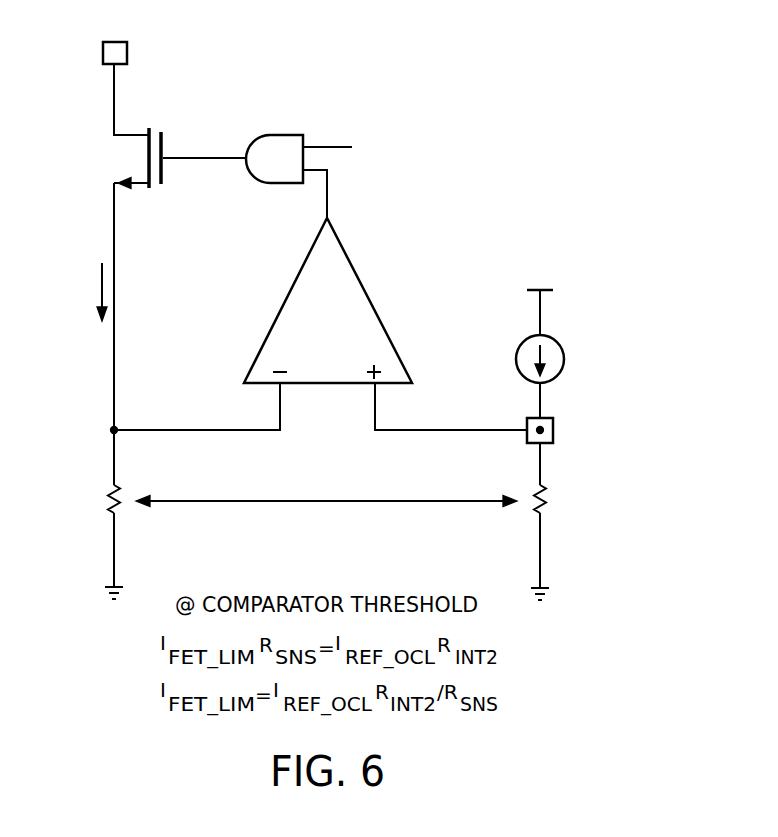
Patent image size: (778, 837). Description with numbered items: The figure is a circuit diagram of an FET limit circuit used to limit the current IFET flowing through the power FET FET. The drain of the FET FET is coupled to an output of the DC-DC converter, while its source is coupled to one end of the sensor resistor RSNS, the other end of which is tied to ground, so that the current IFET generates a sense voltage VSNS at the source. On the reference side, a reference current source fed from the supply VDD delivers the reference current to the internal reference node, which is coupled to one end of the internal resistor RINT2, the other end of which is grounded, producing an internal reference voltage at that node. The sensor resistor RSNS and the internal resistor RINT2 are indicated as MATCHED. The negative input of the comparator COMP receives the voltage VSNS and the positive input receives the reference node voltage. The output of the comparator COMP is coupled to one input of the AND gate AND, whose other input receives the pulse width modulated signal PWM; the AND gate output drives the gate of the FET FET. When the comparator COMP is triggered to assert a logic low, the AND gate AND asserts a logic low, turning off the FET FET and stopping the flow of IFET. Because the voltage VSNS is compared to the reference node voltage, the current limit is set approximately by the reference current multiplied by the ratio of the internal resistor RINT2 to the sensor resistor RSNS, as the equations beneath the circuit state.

The element FET is at (161, 126).
The current I_FET IFET is at (78, 334).
The AND gate AND is at (299, 162).
The pulse width modulated (PWM) signal PWM is at (384, 149).
The comparator COMP is at (320, 324).
The voltage VSNS is at (80, 429).
The sensor resistor R_SNS RSNS is at (83, 540).
The matched resistors indicator MATCHED is at (326, 490).
The supply voltage VDD is at (539, 299).
The internal resistor R_INT2 RINT2 is at (572, 539).